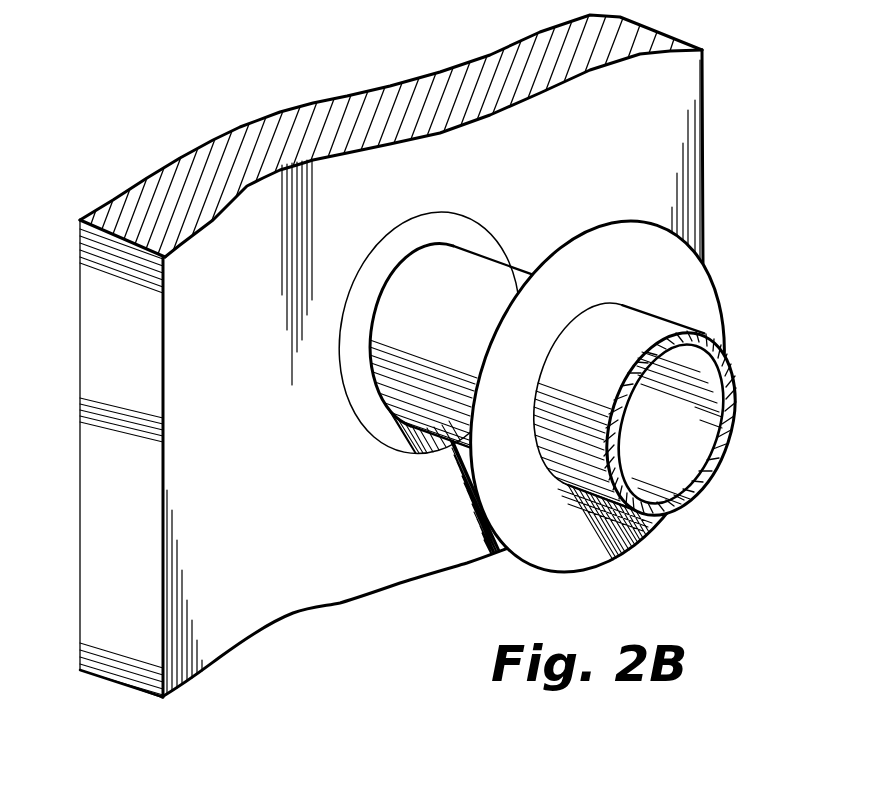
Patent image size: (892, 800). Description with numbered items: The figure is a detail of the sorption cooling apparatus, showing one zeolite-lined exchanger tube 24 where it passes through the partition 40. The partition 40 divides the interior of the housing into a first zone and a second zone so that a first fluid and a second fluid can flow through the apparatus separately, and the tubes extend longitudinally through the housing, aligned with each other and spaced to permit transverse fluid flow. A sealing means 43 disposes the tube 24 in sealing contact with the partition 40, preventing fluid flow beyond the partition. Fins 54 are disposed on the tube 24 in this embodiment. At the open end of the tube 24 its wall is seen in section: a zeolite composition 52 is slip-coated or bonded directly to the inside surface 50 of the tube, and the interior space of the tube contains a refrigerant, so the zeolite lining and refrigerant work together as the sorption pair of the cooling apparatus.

The partition 40 is at (473, 55).
The sealing means 43 is at (407, 243).
The zeolite-lined exchanger tube 24 is at (407, 370).
The fin 54 is at (637, 222).
The inside surface 50 is at (727, 357).
The zeolite composition 52 is at (733, 425).